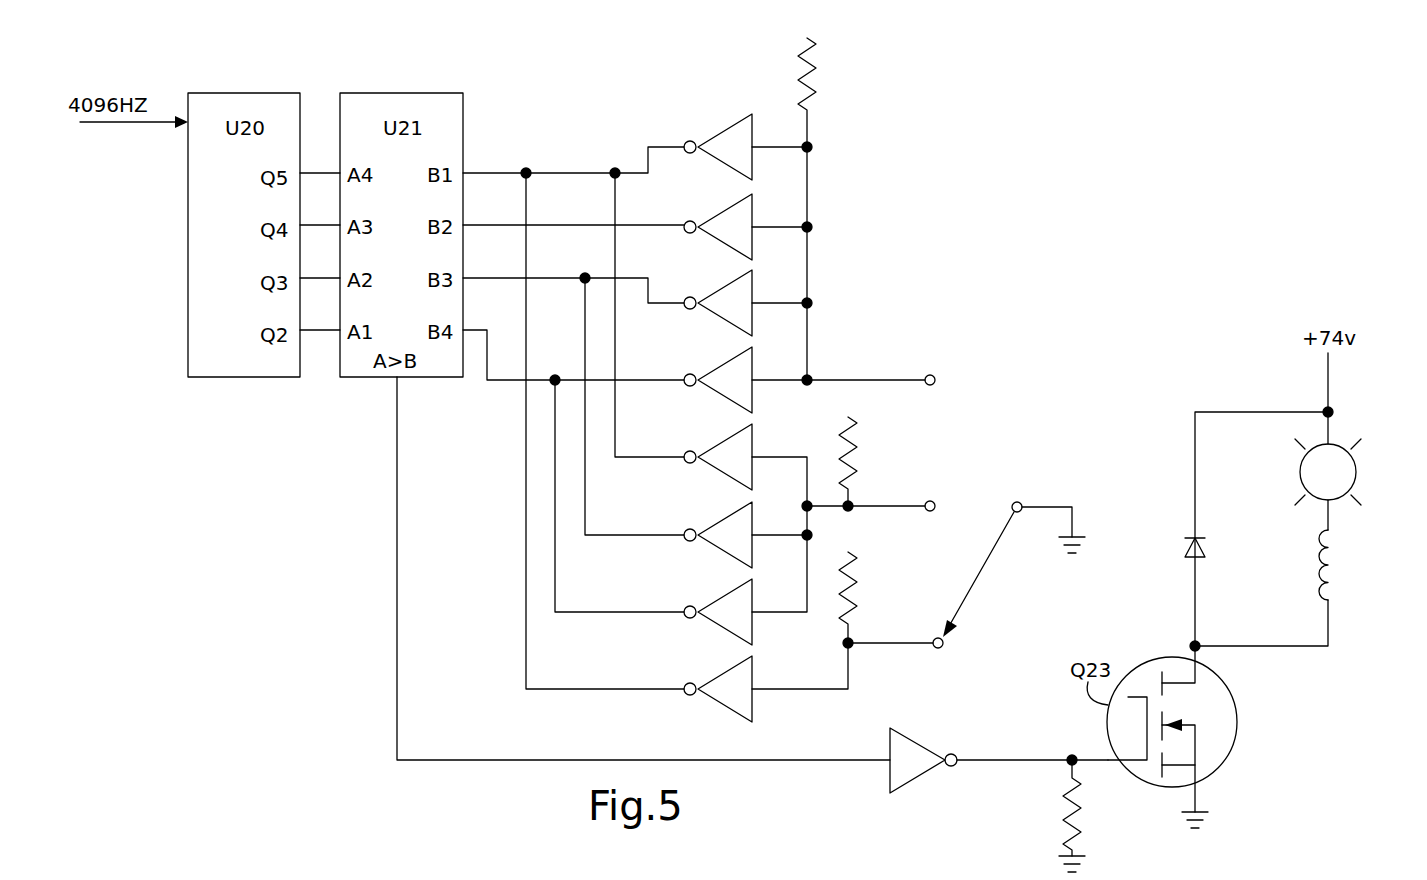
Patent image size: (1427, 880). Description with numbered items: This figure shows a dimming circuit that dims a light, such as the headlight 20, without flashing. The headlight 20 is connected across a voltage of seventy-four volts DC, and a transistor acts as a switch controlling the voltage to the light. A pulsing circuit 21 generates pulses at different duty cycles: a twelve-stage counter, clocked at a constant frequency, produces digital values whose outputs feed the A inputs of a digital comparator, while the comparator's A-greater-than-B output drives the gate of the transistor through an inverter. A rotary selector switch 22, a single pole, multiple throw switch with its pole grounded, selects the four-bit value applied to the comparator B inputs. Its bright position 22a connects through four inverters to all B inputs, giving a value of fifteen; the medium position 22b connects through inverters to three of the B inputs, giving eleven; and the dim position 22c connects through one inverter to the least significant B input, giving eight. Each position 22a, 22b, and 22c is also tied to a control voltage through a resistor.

The headlight 20 is at (1352, 477).
The pulsing circuit 21 is at (940, 206).
The rotary selector switch 22 is at (1022, 407).
The bright position 22a is at (933, 376).
The medium position 22b is at (933, 502).
The dim position 22c is at (941, 648).